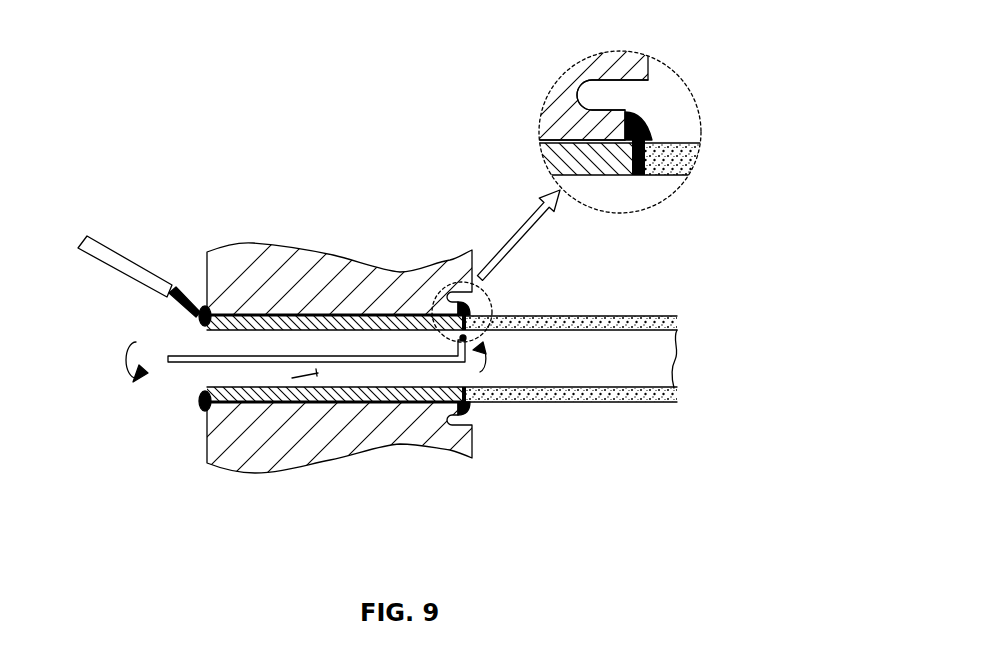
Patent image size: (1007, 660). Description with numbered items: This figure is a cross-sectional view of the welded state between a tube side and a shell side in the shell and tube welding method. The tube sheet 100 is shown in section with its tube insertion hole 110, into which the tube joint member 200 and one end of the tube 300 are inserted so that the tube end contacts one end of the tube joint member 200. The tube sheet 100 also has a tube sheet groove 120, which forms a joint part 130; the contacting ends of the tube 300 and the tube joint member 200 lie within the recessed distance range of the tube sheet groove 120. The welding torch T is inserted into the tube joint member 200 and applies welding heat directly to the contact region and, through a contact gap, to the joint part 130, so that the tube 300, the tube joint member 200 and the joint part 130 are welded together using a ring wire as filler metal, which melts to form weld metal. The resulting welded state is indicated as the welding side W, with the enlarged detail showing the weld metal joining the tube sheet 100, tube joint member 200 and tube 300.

The tube sheet 100 is at (272, 252).
The tube insertion hole 110 is at (305, 376).
The tube sheet groove 120 is at (608, 93).
The joint part 130 is at (617, 110).
The tube joint member 200 is at (382, 396).
The tube 300 is at (575, 403).
The welding torch T is at (188, 356).
The welding side W is at (204, 404).